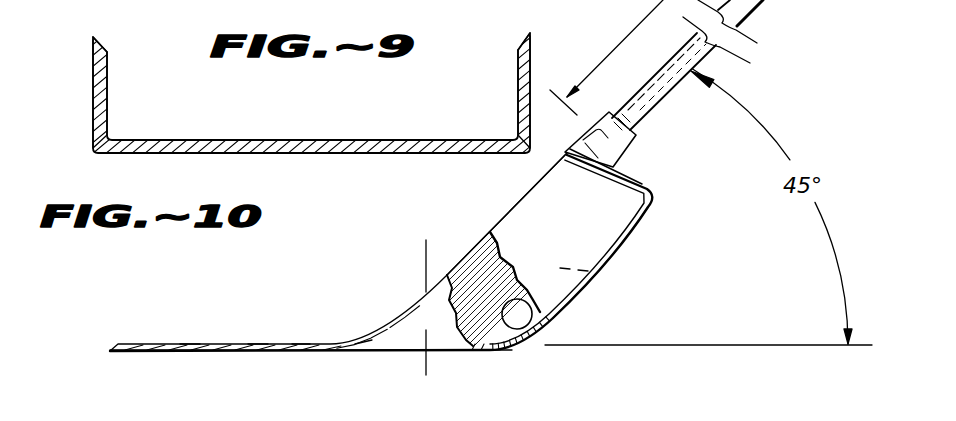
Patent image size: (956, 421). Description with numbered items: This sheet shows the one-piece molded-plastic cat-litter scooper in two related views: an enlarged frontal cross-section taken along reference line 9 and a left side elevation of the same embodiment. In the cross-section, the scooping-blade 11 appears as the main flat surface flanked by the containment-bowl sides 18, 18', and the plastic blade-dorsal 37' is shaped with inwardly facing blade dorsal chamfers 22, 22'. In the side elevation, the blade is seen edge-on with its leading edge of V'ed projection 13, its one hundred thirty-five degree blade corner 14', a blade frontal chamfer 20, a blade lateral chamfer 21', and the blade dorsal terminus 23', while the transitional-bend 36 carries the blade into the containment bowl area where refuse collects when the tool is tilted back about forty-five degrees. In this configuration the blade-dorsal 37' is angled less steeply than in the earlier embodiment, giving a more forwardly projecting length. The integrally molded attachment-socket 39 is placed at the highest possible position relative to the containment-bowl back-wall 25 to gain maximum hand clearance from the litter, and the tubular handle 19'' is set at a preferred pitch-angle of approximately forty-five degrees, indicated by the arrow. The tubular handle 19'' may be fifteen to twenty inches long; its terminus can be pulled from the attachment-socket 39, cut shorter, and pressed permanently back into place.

In FIG. 10, the reference line 9: 9 is at (425, 308).
In FIG. 9, the scooping-blade 11 is at (275, 137).
In FIG. 10, the leading edge of V'ed projection 13 is at (112, 343).
In FIG. 10, the 135-degree blade corner 14' is at (234, 308).
In FIG. 9, the containment-bowl side 18 is at (67, 94).
In FIG. 9, the containment-bowl side 18' is at (495, 92).
In FIG. 10, the containment-bowl side 18' is at (549, 235).
In FIG. 10, the tubular handle 19'' is at (687, 70).
In FIG. 10, the blade frontal chamfer 20 is at (190, 343).
In FIG. 10, the blade lateral chamfer 21' is at (290, 306).
In FIG. 9, the blade dorsal chamfer 22 is at (127, 35).
In FIG. 9, the blade dorsal chamfer 22' is at (486, 39).
In FIG. 10, the blade dorsal chamfer 22' is at (347, 298).
In FIG. 10, the blade dorsal terminus 23' is at (454, 274).
In FIG. 10, the containment-bowl back-wall 25 is at (632, 171).
In FIG. 10, the transitional-bend 36 is at (550, 308).
In FIG. 10, the blade-dorsal 37' is at (378, 298).
In FIG. 10, the attachment-socket 39 is at (622, 153).